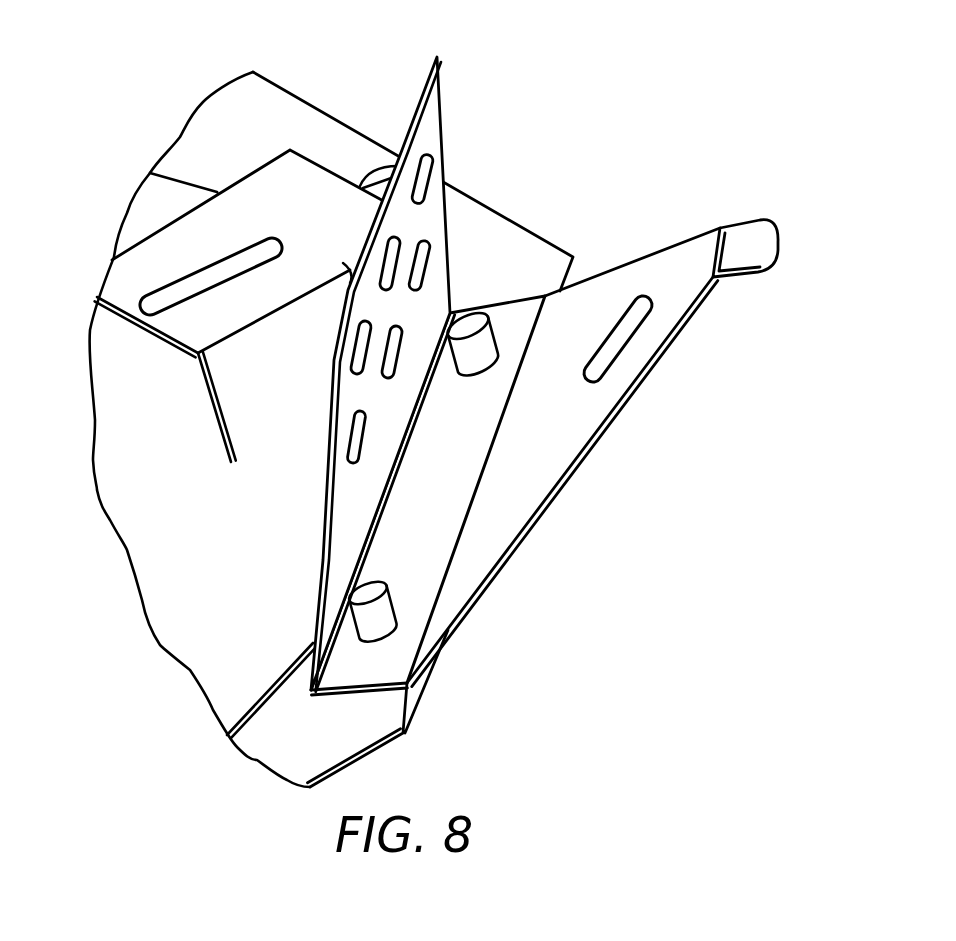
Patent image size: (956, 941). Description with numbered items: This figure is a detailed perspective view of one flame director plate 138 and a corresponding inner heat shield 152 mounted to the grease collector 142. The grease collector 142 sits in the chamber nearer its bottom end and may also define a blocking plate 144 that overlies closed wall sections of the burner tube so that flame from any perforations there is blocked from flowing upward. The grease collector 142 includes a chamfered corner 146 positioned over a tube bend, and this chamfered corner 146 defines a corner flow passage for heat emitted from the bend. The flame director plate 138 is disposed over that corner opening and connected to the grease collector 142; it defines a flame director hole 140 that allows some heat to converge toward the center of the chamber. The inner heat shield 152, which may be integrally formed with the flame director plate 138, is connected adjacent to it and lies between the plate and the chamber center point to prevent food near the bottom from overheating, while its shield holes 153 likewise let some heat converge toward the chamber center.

The flame director plate 138 is at (505, 508).
The flame director hole 140 is at (648, 300).
The grease collector 142 is at (278, 755).
The blocking plate 144 is at (272, 690).
The chamfered corner 146 is at (432, 664).
The inner heat shield 152 is at (432, 108).
The shield hole 153 is at (429, 259).